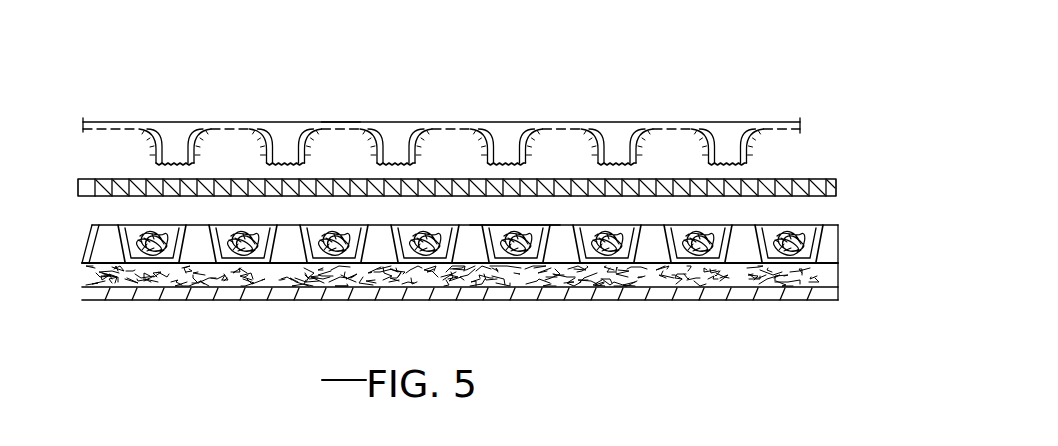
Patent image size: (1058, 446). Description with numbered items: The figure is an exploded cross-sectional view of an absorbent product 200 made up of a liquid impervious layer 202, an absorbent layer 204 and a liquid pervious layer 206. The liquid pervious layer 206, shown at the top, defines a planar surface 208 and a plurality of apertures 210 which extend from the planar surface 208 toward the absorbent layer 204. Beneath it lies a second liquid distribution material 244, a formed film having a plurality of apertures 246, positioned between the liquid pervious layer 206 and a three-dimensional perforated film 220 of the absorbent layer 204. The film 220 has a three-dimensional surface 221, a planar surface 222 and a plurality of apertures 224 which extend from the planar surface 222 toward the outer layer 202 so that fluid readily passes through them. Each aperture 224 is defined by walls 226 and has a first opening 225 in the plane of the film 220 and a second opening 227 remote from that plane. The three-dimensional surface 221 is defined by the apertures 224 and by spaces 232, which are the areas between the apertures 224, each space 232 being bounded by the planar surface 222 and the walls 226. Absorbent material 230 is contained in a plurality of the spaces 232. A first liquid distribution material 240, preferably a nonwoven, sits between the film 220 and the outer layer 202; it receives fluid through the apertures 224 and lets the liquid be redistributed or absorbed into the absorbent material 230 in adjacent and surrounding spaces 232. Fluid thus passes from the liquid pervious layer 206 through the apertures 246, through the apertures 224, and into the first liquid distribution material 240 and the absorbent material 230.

The absorbent product 200 is at (113, 110).
The liquid pervious layer 206 is at (147, 116).
The apertures 210 is at (178, 132).
The planar surface 208 is at (341, 122).
The second liquid distribution material 244 is at (476, 139).
The apertures 246 is at (790, 168).
The planar surface 222 is at (253, 225).
The first opening 225 is at (577, 224).
The apertures 224 is at (657, 238).
The three-dimensional perforated film 220 is at (507, 291).
The three-dimensional surface 221 is at (244, 242).
The walls 226 is at (644, 247).
The second opening 227 is at (673, 231).
The absorbent material 230 is at (793, 252).
The spaces 232 is at (428, 265).
The first liquid distribution material 240 is at (842, 279).
The liquid impervious layer 202 is at (147, 304).
The absorbent layer 204 is at (468, 291).